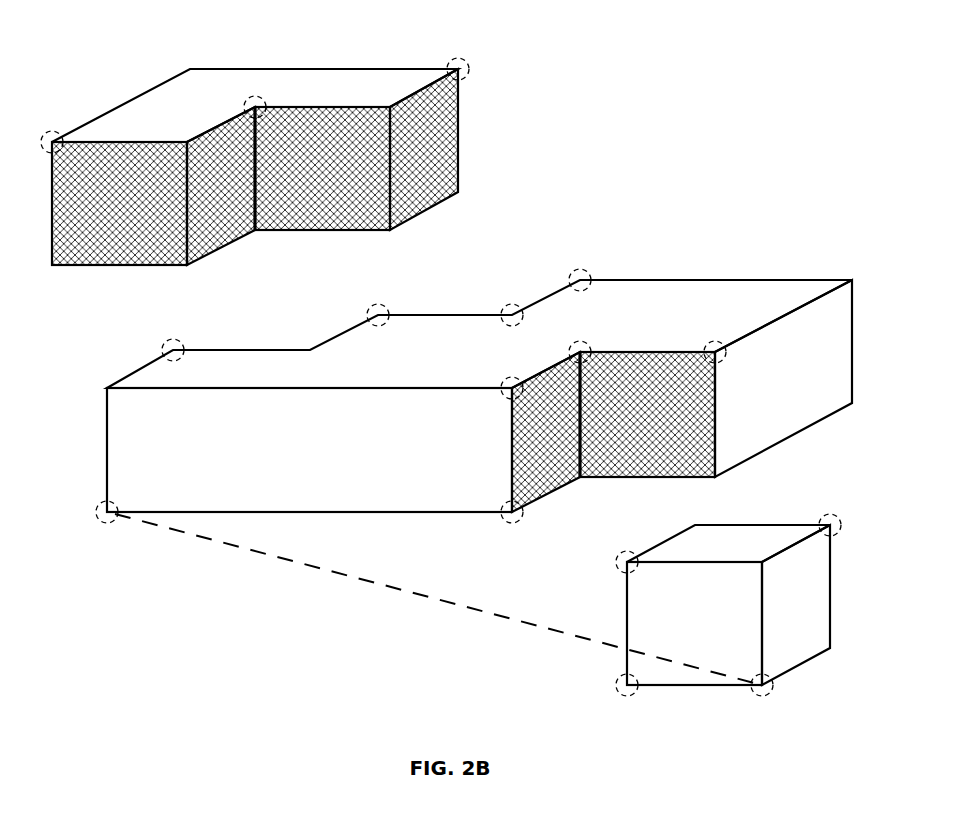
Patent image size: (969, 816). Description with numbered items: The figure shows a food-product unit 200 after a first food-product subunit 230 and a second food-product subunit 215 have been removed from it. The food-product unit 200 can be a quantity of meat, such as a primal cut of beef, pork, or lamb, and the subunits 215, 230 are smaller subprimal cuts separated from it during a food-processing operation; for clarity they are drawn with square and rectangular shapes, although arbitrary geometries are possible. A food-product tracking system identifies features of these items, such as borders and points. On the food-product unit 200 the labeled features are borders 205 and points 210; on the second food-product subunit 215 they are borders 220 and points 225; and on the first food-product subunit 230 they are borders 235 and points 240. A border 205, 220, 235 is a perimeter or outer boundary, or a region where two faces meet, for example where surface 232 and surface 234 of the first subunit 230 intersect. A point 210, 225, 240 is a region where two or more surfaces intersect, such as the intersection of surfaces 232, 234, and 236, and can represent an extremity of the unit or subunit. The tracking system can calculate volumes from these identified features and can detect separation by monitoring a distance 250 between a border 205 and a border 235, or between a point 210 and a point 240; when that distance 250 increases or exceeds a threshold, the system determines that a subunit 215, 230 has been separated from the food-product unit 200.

The food-product unit 200 is at (487, 385).
The border 205 is at (535, 298).
The point 210 is at (595, 275).
The second food-product subunit 215 is at (286, 140).
The border 220 is at (217, 68).
The point 225 is at (470, 63).
The first food-product subunit 230 is at (738, 608).
The surface 232 is at (810, 614).
The surface 234 is at (655, 609).
The border 235 is at (722, 608).
The surface 236 is at (717, 545).
The point 240 is at (633, 553).
The distance 250 is at (375, 584).